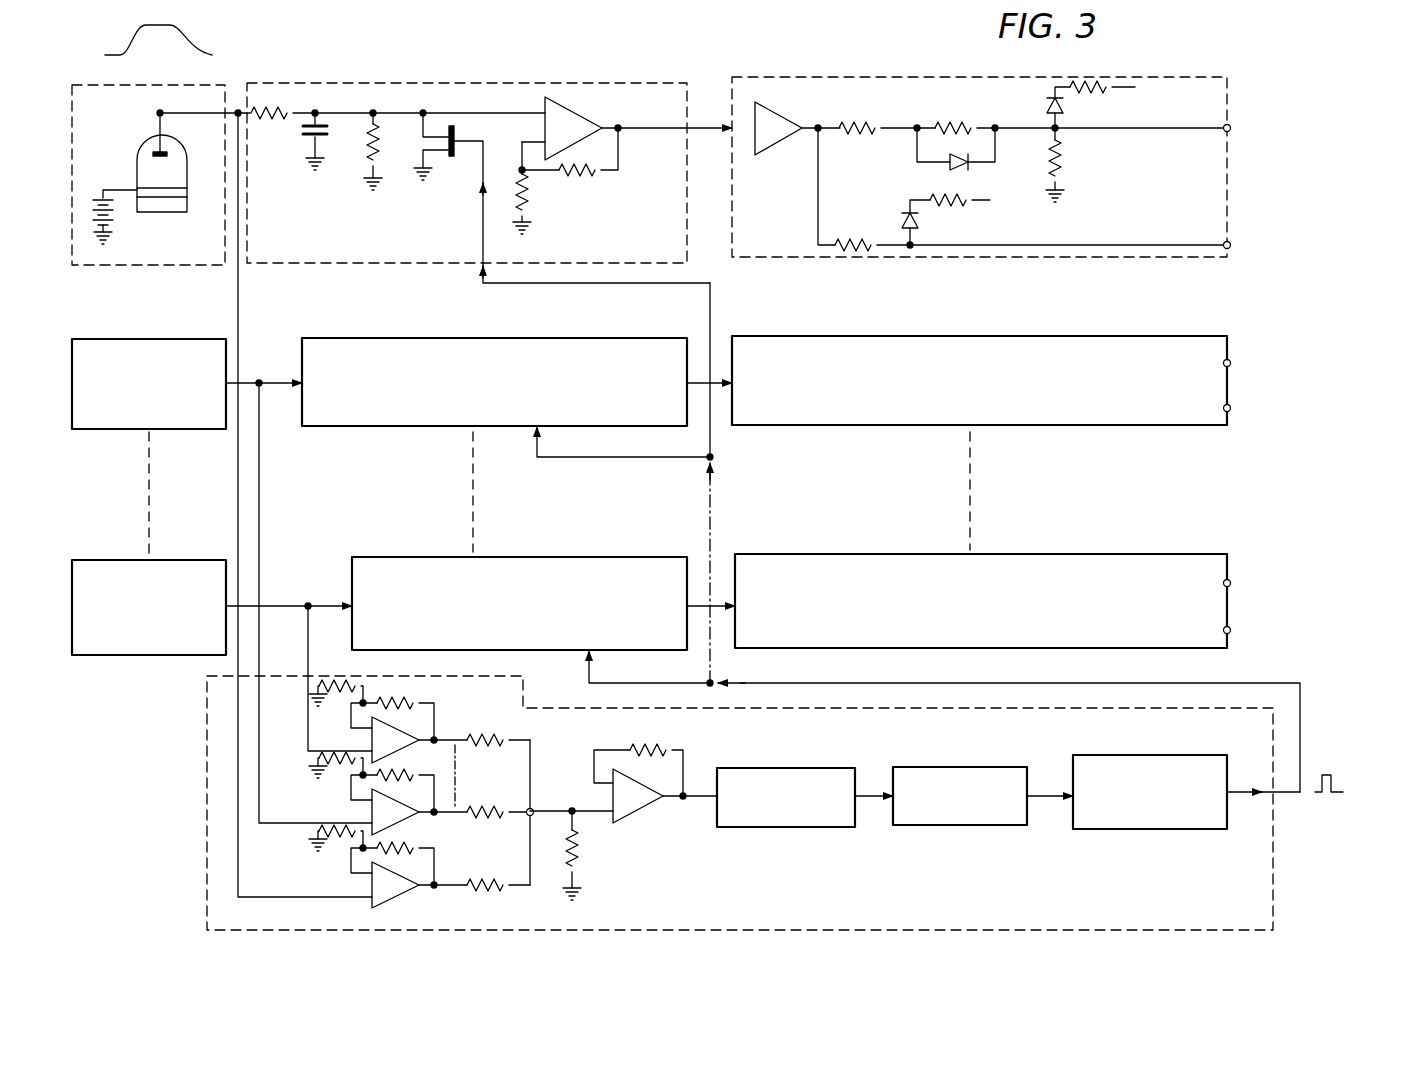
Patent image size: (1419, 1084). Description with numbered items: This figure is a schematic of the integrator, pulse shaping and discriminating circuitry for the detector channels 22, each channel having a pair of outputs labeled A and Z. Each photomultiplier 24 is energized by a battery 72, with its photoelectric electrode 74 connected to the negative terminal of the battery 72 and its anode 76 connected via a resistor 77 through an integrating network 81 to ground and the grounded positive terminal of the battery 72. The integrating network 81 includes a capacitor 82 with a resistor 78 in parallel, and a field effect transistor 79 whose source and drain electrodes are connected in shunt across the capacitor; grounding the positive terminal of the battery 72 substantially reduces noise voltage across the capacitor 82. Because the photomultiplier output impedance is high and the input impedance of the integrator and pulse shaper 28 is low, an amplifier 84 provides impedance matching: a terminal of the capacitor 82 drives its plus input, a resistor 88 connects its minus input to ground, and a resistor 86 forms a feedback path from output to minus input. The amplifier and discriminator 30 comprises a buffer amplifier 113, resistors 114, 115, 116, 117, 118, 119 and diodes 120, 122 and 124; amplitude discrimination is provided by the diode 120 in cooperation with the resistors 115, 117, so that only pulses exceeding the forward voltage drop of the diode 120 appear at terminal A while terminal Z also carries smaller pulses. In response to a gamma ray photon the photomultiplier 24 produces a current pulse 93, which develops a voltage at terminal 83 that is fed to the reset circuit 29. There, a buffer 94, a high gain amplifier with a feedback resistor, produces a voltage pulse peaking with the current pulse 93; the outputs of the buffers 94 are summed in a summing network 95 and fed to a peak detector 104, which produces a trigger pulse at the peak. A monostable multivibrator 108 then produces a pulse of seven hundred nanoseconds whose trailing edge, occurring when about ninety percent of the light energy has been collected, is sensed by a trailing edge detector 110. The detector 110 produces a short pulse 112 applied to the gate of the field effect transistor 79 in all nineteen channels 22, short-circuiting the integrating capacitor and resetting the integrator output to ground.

The current pulse 93 is at (198, 40).
The photomultiplier 24 is at (95, 80).
The anode 76 is at (164, 150).
The photoelectric electrode 74 is at (175, 193).
The battery 72 is at (116, 220).
The terminal 83 is at (238, 106).
The integrator and pulse shaper 28 is at (306, 270).
The resistor 77 is at (271, 121).
The capacitor 82 is at (328, 137).
The resistor 78 is at (379, 150).
The field effect transistor 79 is at (448, 185).
The integrating network 81 is at (388, 192).
The amplifier 84 is at (573, 112).
The resistor 86 is at (583, 178).
The resistor 88 is at (528, 198).
The amplifier and discriminator 30 is at (801, 76).
The buffer amplifier 113 is at (775, 146).
The resistor 114 is at (856, 133).
The resistor 115 is at (961, 122).
The diode 120 is at (950, 168).
The resistor 118 is at (852, 256).
The diode 124 is at (904, 220).
The resistor 119 is at (963, 208).
The diode 122 is at (1063, 106).
The resistor 116 is at (1116, 100).
The resistor 117 is at (1062, 154).
The channel 22 is at (1250, 181).
The reset circuit 29 is at (418, 935).
The buffer 94 is at (440, 729).
The summing network 95 is at (551, 763).
The peak detector 104 is at (776, 768).
The monostable multivibrator 108 is at (951, 767).
The trailing edge detector 110 is at (1136, 755).
The pulse 112 is at (1337, 779).